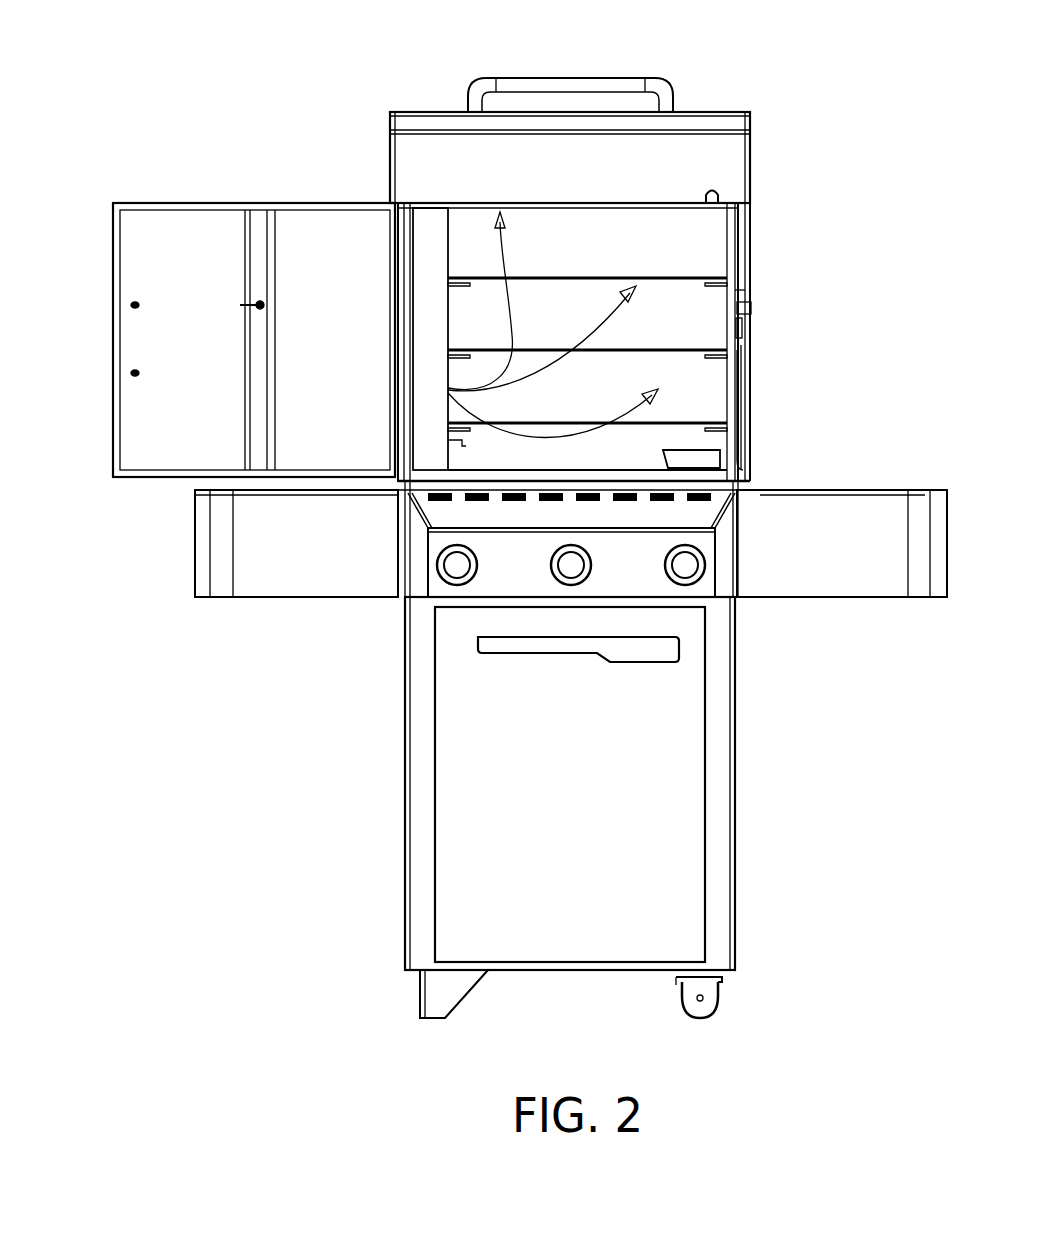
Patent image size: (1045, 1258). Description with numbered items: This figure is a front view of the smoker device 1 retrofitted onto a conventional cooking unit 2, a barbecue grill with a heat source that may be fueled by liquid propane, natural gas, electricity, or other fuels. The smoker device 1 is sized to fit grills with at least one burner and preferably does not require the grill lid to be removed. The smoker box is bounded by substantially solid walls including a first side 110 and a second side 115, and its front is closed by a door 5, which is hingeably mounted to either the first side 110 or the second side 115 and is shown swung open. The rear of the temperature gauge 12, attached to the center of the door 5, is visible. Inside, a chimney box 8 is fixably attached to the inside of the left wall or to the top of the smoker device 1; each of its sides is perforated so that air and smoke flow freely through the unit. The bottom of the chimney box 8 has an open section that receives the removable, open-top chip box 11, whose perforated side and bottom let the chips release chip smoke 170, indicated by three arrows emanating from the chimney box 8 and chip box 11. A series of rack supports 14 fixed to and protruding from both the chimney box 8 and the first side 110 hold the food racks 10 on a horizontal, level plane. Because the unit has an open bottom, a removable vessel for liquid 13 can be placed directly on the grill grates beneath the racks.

The smoker device 1 is at (570, 61).
The cooking unit 2 is at (600, 259).
The door 5 is at (212, 340).
The chimney box 8 is at (347, 292).
The food racks 10 is at (587, 328).
The chip box 11 is at (491, 455).
The temperature gauge 12 is at (196, 226).
The removable vessel for liquid 13 is at (754, 445).
The rack supports 14 is at (765, 381).
The first side 110 is at (843, 367).
The second side 115 is at (665, 314).
The chip smoke 170 is at (344, 375).